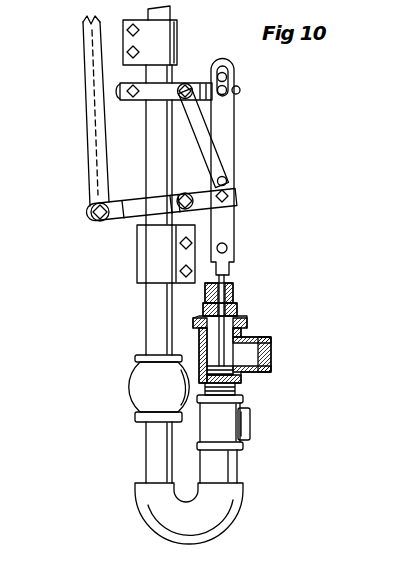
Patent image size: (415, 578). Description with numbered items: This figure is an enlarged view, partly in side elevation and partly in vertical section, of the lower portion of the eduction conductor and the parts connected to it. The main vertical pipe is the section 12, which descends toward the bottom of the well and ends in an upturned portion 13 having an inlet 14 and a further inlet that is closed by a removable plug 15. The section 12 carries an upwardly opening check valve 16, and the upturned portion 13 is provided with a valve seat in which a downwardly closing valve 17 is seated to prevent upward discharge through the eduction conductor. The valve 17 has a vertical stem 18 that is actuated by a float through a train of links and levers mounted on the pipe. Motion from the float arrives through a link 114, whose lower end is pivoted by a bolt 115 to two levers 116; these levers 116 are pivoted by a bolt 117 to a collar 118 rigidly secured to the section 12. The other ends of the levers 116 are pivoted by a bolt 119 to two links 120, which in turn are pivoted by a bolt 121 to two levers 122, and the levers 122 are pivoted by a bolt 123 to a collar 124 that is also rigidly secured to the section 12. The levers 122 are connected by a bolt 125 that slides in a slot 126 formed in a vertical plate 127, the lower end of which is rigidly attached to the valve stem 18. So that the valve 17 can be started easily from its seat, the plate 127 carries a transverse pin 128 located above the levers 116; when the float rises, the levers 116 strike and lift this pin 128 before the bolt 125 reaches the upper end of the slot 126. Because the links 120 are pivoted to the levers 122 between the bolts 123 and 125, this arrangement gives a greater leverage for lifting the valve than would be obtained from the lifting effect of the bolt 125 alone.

The section 12 is at (158, 146).
The upturned portion 13 is at (227, 468).
The inlet 14 is at (250, 352).
The removable plug 15 is at (250, 420).
The upwardly opening check valve 16 is at (147, 389).
The downwardly closing valve 17 is at (222, 363).
The vertical stem 18 is at (225, 334).
The link 114 is at (92, 178).
The bolt 115 is at (95, 214).
The levers 116 is at (136, 204).
The bolt 117 is at (198, 209).
The collar 118 is at (143, 266).
The bolt 119 is at (191, 203).
The links 120 is at (204, 146).
The bolt 121 is at (184, 87).
The levers 122 is at (157, 90).
The bolt 123 is at (121, 92).
The collar 124 is at (133, 42).
The bolt 125 is at (226, 94).
The slot 126 is at (229, 78).
The vertical plate 127 is at (228, 228).
The transverse pin 128 is at (227, 179).